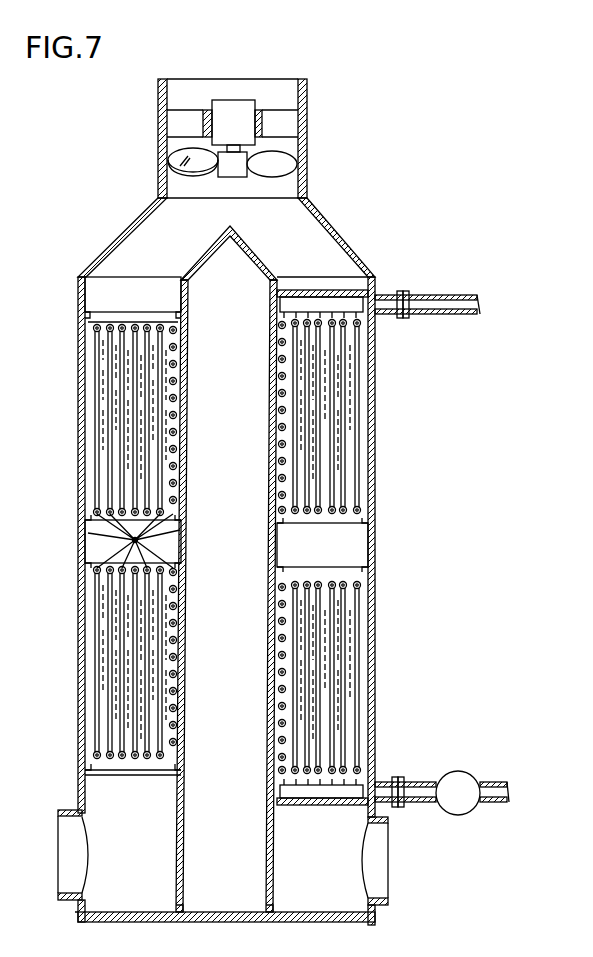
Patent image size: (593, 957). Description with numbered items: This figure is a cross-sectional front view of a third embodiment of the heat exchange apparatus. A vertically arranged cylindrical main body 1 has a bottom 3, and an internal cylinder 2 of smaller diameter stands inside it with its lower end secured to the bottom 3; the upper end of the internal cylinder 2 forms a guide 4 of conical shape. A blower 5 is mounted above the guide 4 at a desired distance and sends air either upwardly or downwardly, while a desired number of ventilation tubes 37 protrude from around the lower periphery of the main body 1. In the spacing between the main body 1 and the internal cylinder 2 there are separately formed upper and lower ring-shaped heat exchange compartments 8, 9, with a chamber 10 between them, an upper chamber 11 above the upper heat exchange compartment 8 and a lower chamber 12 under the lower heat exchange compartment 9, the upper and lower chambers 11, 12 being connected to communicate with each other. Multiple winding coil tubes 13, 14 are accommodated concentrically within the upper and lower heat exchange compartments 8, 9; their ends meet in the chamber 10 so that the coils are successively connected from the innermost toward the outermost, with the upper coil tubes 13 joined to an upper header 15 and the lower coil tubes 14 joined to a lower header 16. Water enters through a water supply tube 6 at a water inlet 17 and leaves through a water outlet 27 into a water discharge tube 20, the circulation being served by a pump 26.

The main body 1 is at (80, 486).
The internal cylinder 2 is at (277, 548).
The bottom 3 is at (292, 912).
The guide 4 is at (228, 230).
The blower 5 is at (297, 150).
The water supply tube 6 is at (432, 296).
The upper heat exchange compartment 8 is at (88, 380).
The lower heat exchange compartment 9 is at (88, 638).
The chamber 10 is at (100, 546).
The upper chamber 11 is at (105, 292).
The lower chamber 12 is at (100, 792).
The upper coil tubes 13 is at (120, 444).
The lower coil tubes 14 is at (105, 692).
The upper header 15 is at (327, 290).
The lower header 16 is at (326, 805).
The water inlet 17 is at (385, 295).
The water discharge tube 20 is at (409, 804).
The pump 26 is at (460, 771).
The water outlet 27 is at (386, 782).
The ventilation tubes 37 is at (65, 900).